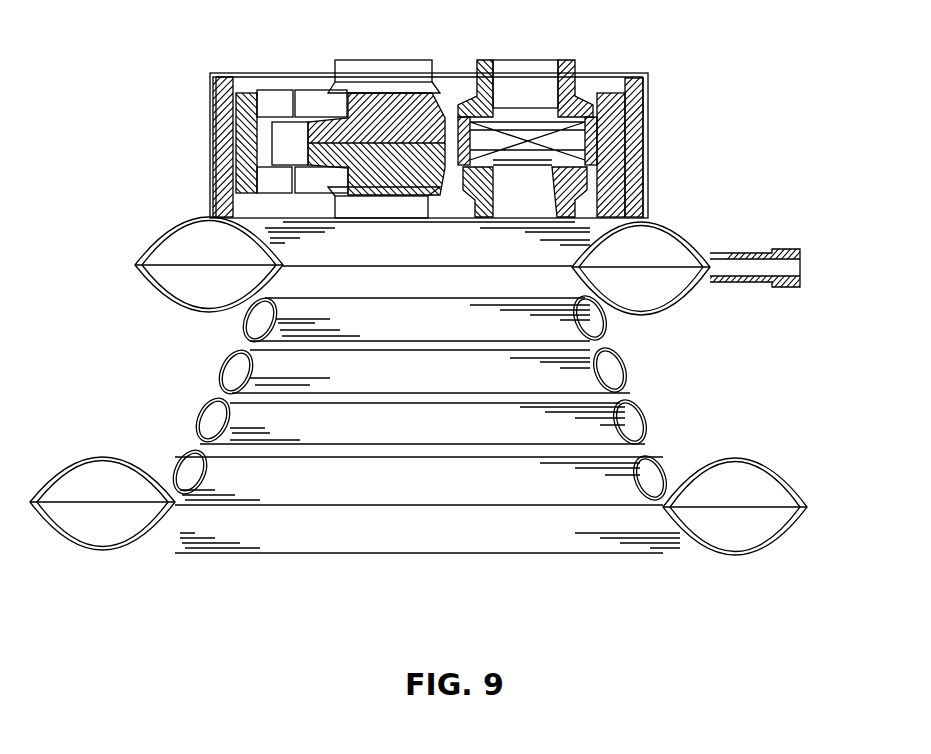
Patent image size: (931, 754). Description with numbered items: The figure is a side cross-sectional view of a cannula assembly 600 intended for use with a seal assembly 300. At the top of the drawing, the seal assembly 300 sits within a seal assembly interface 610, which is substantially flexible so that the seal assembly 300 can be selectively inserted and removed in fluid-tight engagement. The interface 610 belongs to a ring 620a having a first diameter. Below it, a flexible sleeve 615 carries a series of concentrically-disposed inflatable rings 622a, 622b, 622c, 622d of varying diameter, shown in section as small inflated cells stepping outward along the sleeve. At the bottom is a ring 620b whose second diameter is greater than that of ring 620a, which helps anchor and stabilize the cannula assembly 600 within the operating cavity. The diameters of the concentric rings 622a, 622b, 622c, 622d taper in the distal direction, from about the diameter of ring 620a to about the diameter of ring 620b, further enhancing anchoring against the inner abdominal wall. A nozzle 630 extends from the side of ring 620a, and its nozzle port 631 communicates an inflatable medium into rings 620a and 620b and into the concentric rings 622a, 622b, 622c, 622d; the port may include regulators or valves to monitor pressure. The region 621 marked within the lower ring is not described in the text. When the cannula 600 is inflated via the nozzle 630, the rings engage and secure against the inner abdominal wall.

The seal assembly 300 is at (537, 46).
The cannula assembly 600 is at (776, 174).
The seal assembly interface 610 is at (648, 127).
The flexible sleeve 615 is at (627, 318).
The ring 620a is at (663, 221).
The ring 620b is at (735, 557).
The inflatable chamber 621 is at (760, 480).
The concentrically-disposed inflatable ring 622a is at (244, 319).
The concentrically-disposed inflatable ring 622b is at (222, 366).
The concentrically-disposed inflatable ring 622c is at (200, 418).
The concentrically-disposed inflatable ring 622d is at (172, 468).
The nozzle 630 is at (781, 252).
The nozzle port 631 is at (806, 266).